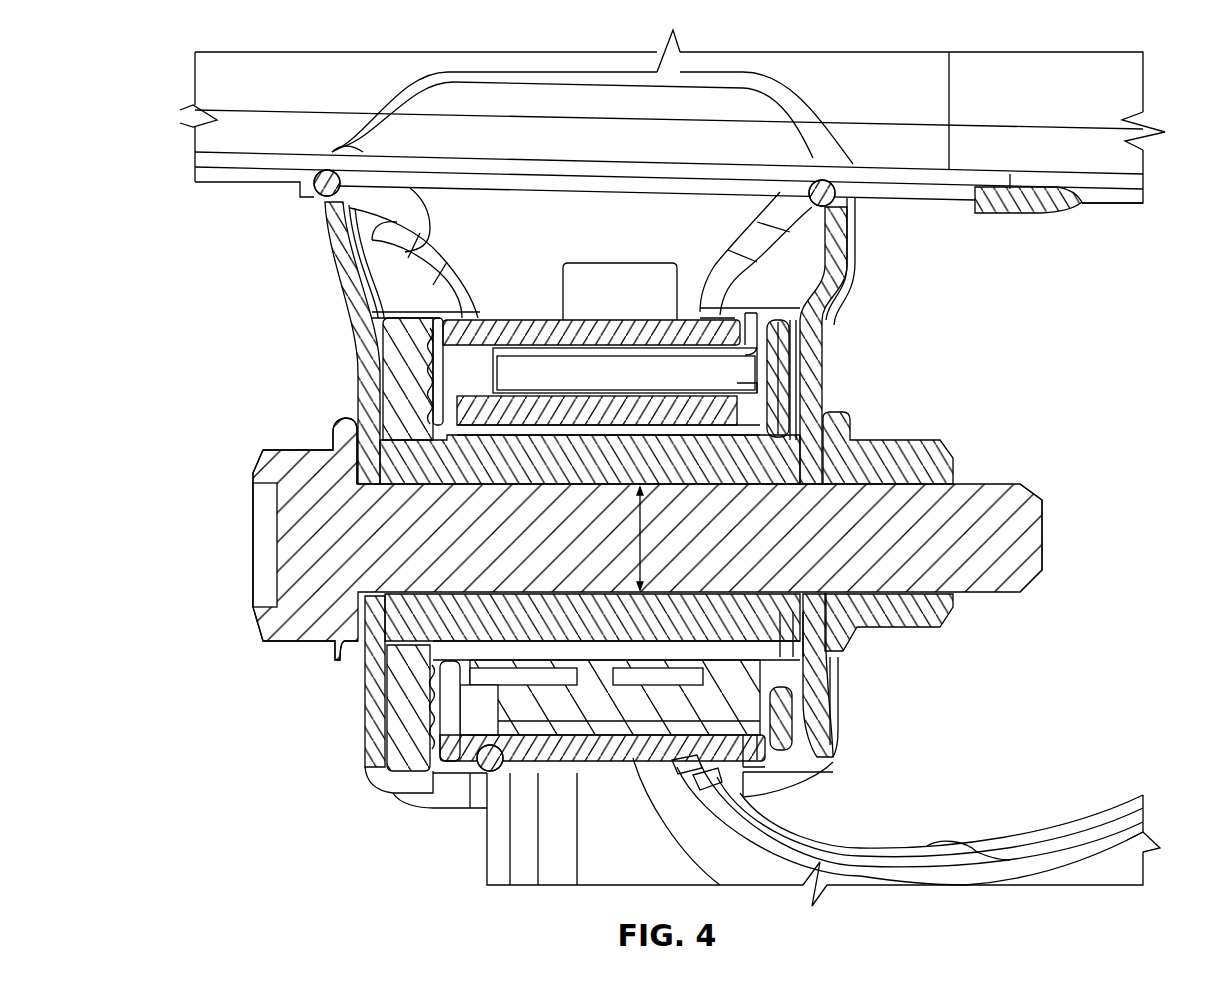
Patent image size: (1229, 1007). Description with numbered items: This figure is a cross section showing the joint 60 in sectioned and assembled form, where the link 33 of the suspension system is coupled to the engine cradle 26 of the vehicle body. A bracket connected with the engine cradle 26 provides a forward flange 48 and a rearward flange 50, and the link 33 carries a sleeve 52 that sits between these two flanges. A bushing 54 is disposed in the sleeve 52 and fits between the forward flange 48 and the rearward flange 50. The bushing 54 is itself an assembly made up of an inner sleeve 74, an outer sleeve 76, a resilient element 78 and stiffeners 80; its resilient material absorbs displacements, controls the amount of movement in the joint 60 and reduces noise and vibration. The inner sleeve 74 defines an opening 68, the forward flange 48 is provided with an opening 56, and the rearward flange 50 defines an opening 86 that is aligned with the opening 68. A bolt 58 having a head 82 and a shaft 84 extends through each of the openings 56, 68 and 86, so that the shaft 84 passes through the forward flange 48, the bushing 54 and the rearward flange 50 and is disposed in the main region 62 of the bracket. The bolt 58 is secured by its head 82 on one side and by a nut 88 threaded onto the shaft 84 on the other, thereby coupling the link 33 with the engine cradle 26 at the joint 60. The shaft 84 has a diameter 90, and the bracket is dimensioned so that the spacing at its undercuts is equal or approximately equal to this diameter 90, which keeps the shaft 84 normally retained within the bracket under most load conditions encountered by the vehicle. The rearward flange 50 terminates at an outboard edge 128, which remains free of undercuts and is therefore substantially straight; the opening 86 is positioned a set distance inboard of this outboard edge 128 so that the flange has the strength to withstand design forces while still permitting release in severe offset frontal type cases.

The engine cradle 26 is at (1100, 148).
The link 33 is at (500, 837).
The forward flange 48 is at (362, 345).
The rearward flange 50 is at (815, 347).
The sleeve 52 is at (700, 413).
The bushing 54 is at (403, 720).
The opening 56 is at (340, 607).
The bolt 58 is at (303, 543).
The joint 60 is at (340, 775).
The main region 62 is at (370, 487).
The opening 68 is at (520, 487).
The inner sleeve 74 is at (790, 380).
The outer sleeve 76 is at (538, 322).
The resilient element 78 is at (787, 707).
The stiffeners 80 is at (650, 670).
The head 82 is at (277, 457).
The shaft 84 is at (967, 492).
The opening 86 is at (813, 485).
The nut 88 is at (910, 628).
The diameter 90 is at (640, 540).
The outboard edge 128 is at (593, 487).